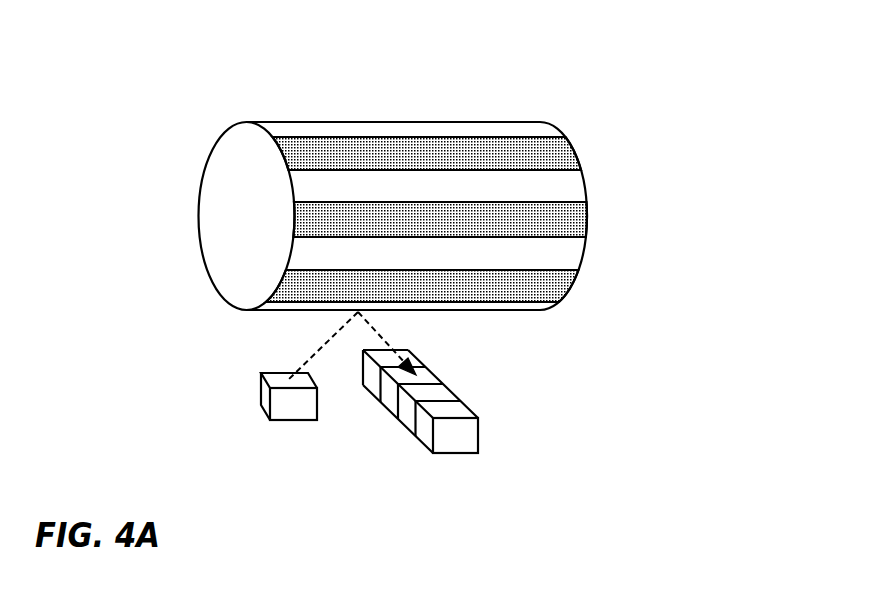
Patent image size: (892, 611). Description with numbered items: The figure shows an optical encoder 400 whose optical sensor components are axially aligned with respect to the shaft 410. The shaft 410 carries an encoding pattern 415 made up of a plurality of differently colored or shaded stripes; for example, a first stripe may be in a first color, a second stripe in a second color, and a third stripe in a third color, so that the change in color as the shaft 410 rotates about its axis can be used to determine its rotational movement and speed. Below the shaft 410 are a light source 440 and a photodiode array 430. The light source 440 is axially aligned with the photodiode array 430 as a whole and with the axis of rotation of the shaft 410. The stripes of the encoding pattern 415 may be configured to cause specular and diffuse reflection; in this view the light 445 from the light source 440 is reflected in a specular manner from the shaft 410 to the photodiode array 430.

The optical encoder 400 is at (171, 141).
The shaft 410 is at (248, 122).
The encoding pattern 415 is at (540, 160).
The photodiode array 430 is at (478, 418).
The light source 440 is at (263, 405).
The light 445 is at (313, 355).